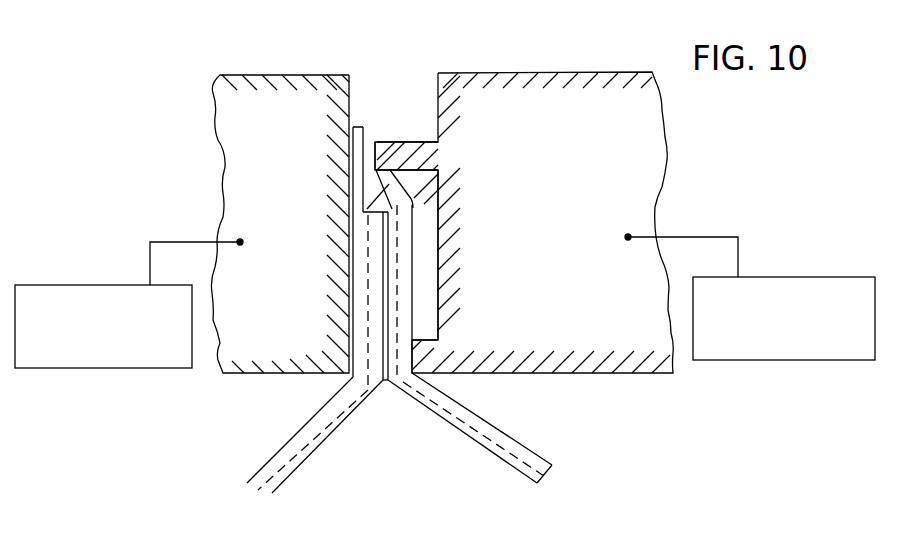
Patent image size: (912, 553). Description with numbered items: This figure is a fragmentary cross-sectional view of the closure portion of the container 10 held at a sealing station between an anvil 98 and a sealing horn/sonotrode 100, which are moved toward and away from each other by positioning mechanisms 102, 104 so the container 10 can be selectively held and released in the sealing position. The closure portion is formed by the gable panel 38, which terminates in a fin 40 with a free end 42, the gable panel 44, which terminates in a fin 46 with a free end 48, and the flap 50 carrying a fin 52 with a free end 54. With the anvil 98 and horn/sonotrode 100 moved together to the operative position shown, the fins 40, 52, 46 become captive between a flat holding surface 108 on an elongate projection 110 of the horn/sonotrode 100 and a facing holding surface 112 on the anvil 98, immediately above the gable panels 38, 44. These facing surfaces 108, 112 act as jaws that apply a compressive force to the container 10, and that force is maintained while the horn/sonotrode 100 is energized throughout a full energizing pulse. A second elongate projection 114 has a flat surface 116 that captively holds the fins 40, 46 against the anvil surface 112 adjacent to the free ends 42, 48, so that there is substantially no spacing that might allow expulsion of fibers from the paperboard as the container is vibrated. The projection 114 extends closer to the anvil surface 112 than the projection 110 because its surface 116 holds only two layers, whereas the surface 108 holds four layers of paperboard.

The container 10 is at (533, 451).
The gable panel 38 is at (272, 458).
The fin 40 is at (367, 155).
The free end 42 is at (367, 128).
The gable panel 44 is at (482, 420).
The fin 46 is at (380, 138).
The free end 48 is at (377, 138).
The flap 50 is at (390, 269).
The fin 52 is at (368, 207).
The free end 54 is at (438, 171).
The anvil 98 is at (280, 137).
The sealing horn/sonotrode 100 is at (610, 146).
The positioning mechanism 102 is at (135, 368).
The positioning mechanism 104 is at (847, 360).
The holding surface 108 is at (408, 370).
The elongate projection 110 is at (433, 338).
The holding surface 112 is at (356, 343).
The second elongate projection 114 is at (378, 139).
The flat surface 116 is at (352, 150).